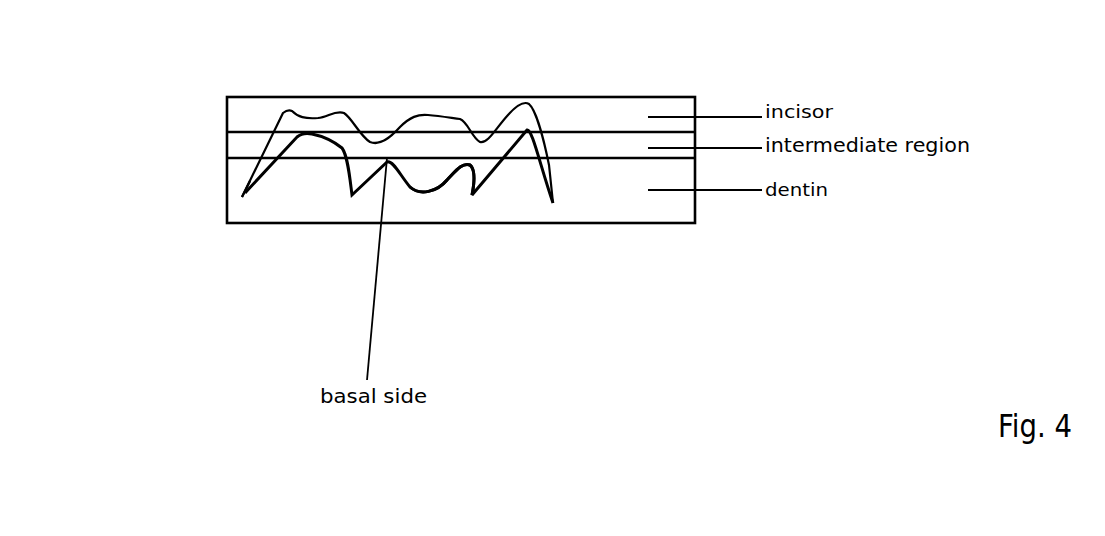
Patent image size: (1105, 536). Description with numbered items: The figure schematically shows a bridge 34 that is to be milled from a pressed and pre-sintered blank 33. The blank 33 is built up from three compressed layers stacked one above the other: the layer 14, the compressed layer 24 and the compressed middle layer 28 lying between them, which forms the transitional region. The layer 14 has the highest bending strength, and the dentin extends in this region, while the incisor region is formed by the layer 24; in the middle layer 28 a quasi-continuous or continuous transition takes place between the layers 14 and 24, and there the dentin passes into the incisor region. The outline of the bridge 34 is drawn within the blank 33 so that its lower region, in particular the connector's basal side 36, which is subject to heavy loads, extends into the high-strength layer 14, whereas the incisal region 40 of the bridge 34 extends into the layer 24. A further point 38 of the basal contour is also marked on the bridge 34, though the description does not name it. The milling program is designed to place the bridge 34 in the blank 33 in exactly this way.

The layer 14 is at (241, 203).
The layer 24 is at (243, 117).
The middle layer 28 is at (245, 147).
The blank 33 is at (623, 203).
The bridge 34 is at (425, 170).
The basal side 36 is at (380, 162).
The basal side elevation 38 is at (458, 182).
The incisal region 40 is at (291, 129).